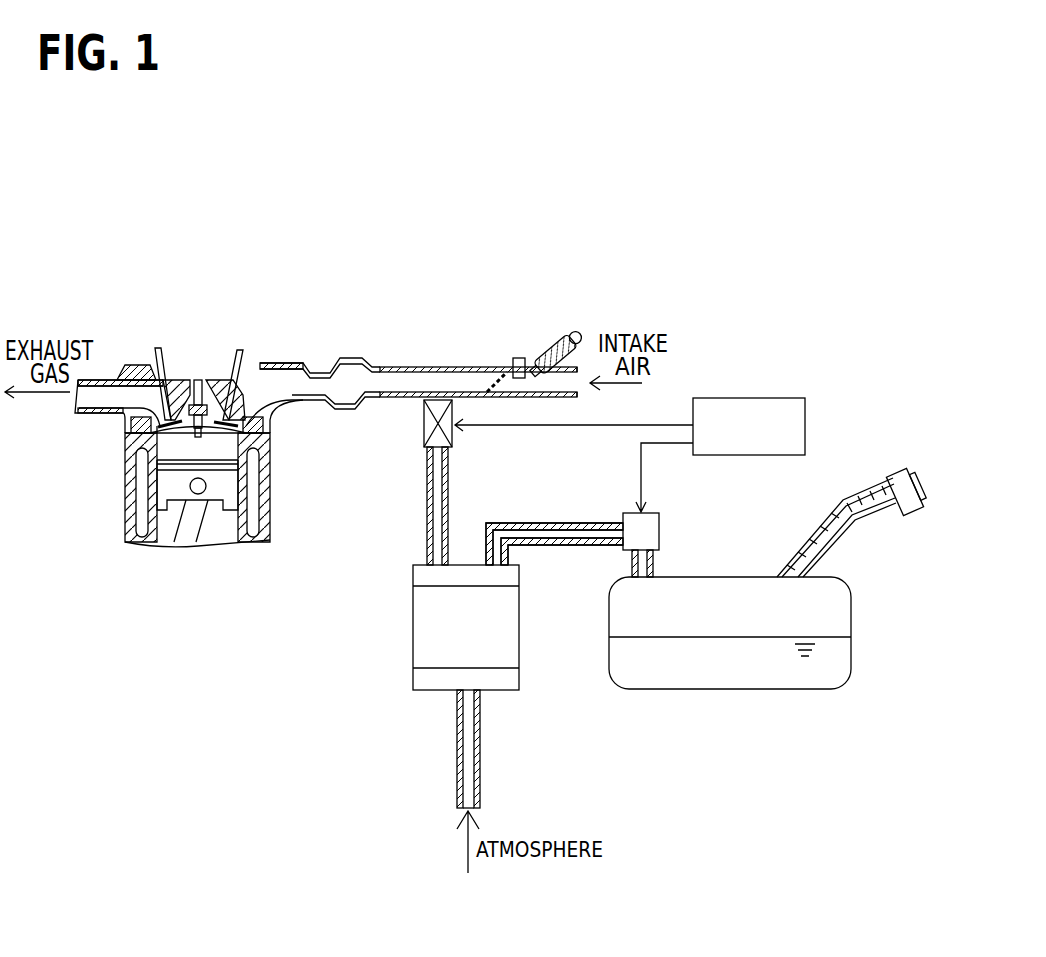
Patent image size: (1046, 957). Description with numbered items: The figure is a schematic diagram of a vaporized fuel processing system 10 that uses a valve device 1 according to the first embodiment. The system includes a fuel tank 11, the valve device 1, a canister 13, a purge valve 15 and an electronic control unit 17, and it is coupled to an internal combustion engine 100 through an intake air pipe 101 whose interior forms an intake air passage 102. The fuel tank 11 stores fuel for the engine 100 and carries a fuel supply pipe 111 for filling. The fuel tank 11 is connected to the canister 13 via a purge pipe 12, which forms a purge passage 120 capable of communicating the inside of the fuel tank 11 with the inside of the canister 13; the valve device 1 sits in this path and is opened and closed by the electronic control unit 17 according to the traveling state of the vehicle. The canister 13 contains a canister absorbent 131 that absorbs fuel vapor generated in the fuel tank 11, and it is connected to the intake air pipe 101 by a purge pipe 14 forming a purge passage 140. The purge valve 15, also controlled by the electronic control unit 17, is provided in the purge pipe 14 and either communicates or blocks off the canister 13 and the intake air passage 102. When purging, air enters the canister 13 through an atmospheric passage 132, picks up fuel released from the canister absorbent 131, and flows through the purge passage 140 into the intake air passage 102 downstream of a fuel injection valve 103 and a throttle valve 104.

The valve device 1 is at (630, 520).
The vaporized fuel processing system 10 is at (720, 331).
The fuel tank 11 is at (851, 622).
The purge pipe 12 is at (565, 523).
The canister 13 is at (520, 596).
The purge pipe 14 is at (448, 508).
The purge valve 15 is at (424, 426).
The electronic control unit 17 is at (794, 420).
The internal combustion engine 100 is at (127, 501).
The intake air pipe 101 is at (437, 370).
The intake air passage 102 is at (388, 376).
The fuel injection valve 103 is at (573, 342).
The throttle valve 104 is at (503, 370).
The fuel supply pipe 111 is at (795, 548).
The purge passage 120 is at (598, 536).
The canister absorbent 131 is at (493, 650).
The atmospheric passage 132 is at (468, 746).
The purge passage 140 is at (437, 484).